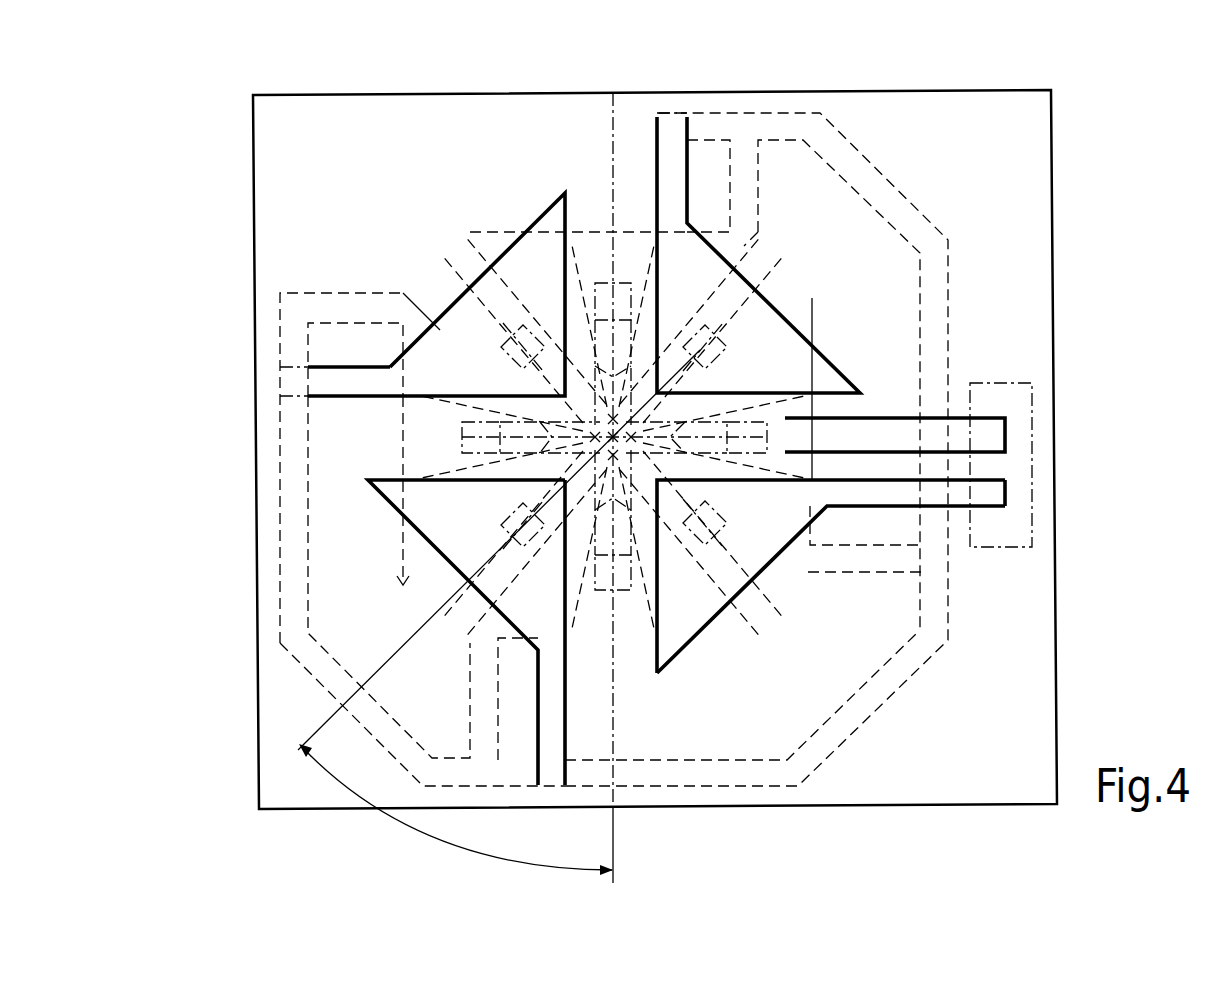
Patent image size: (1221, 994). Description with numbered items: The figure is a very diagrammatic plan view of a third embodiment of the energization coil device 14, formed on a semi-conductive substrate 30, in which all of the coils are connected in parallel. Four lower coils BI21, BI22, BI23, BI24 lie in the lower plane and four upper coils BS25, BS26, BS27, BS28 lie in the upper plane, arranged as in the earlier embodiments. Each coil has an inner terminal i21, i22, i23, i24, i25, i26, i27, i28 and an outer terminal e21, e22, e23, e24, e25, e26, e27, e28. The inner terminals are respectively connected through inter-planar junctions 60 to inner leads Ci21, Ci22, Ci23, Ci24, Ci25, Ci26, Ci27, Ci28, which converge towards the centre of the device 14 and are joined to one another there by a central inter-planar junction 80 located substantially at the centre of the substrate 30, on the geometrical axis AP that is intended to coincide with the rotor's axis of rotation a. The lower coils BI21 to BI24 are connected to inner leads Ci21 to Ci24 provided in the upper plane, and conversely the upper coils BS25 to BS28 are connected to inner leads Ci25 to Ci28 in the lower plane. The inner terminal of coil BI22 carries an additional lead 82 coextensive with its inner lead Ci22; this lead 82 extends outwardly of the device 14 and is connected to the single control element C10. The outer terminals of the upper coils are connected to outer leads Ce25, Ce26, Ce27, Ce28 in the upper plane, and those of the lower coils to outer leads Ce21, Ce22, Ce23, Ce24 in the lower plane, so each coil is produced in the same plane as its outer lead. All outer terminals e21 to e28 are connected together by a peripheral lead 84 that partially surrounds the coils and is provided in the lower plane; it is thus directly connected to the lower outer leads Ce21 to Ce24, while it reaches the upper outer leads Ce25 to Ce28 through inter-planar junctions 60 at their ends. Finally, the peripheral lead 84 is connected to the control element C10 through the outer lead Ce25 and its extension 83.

The semi-conductive substrate 30 is at (255, 122).
The energization coil device 14 is at (392, 83).
The additional lead 82 is at (858, 437).
The extension 83 is at (990, 488).
The peripheral lead 84 is at (764, 772).
The inter-planar junction 60 is at (690, 540).
The inter-planar junction 80 is at (617, 430).
The control element C10 is at (1012, 400).
The geometrical axis AP is at (594, 437).
The axis of rotation a is at (456, 813).
The outer terminal e21 is at (469, 648).
The outer terminal e22 is at (822, 549).
The outer terminal e23 is at (765, 218).
The outer terminal e24 is at (386, 327).
The outer terminal e25 is at (842, 479).
The outer terminal e26 is at (689, 223).
The outer terminal e27 is at (386, 397).
The outer terminal e28 is at (529, 648).
The inner terminal i21 is at (609, 592).
The inner terminal i22 is at (783, 420).
The inner terminal i23 is at (607, 284).
The inner terminal i24 is at (460, 444).
The inner terminal i25 is at (715, 534).
The inner terminal i26 is at (724, 352).
The inner terminal i27 is at (503, 338).
The inner terminal i28 is at (506, 541).
The outer lead Ce21 is at (504, 716).
The outer lead Ce22 is at (868, 572).
The outer lead Ce23 is at (748, 105).
The outer lead Ce24 is at (337, 292).
The outer lead Ce25 is at (865, 496).
The outer lead Ce26 is at (657, 178).
The outer lead Ce27 is at (334, 396).
The outer lead Ce28 is at (560, 708).
The inner lead Ci21 is at (586, 590).
The inner lead Ci22 is at (752, 400).
The inner lead Ci23 is at (638, 300).
The inner lead Ci24 is at (420, 470).
The inner lead Ci25 is at (738, 498).
The inner lead Ci26 is at (702, 329).
The inner lead Ci27 is at (558, 327).
The inner lead Ci28 is at (523, 545).
The upper coil BS25 is at (658, 675).
The upper coil BS26 is at (848, 392).
The upper coil BS27 is at (565, 193).
The upper coil BS28 is at (366, 483).
The lower coil BI21 is at (727, 630).
The lower coil BI22 is at (783, 316).
The lower coil BI23 is at (500, 240).
The lower coil BI24 is at (400, 572).